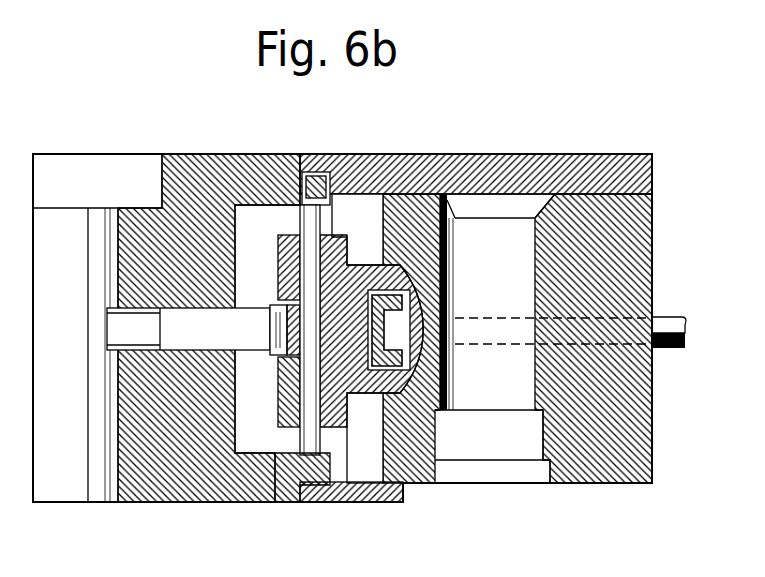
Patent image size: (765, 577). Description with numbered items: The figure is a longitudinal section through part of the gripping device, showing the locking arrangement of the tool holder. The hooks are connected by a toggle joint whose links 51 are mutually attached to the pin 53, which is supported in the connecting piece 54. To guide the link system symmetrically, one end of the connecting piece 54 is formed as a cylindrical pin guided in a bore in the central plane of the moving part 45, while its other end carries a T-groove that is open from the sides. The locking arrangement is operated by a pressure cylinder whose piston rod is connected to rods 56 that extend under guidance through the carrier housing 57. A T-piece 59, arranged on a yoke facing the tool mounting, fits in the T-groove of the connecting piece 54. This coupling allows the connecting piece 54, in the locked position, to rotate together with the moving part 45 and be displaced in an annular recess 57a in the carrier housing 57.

The moving part 45 is at (175, 165).
The links 51 is at (280, 292).
The pin 53 is at (298, 438).
The connecting piece 54 is at (213, 341).
The rods 56 is at (664, 317).
The carrier housing 57 is at (403, 212).
The annular recess 57a is at (453, 245).
The T-piece 59 is at (453, 297).